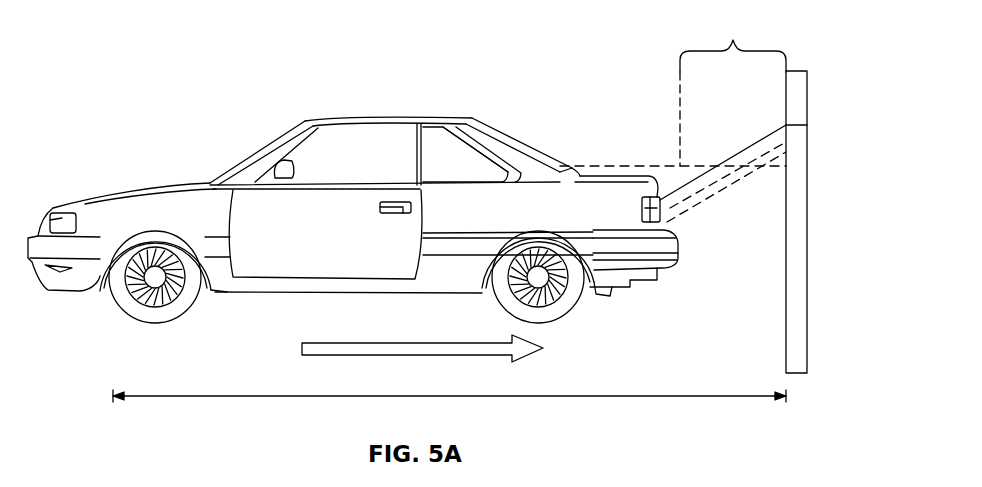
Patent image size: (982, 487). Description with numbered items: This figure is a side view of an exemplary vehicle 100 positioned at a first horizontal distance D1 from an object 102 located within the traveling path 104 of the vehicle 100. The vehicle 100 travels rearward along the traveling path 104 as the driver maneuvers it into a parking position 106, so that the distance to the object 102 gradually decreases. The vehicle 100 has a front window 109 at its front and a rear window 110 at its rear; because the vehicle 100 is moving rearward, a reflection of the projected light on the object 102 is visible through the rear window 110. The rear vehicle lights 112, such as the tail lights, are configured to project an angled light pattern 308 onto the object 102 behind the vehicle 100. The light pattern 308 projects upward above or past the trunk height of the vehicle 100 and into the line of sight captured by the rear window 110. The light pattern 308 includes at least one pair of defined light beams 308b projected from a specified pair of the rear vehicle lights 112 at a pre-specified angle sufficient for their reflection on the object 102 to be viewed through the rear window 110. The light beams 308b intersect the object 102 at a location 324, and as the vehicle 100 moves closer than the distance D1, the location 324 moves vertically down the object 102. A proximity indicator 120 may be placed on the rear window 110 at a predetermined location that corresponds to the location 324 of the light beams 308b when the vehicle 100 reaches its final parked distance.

The vehicle 100 is at (330, 118).
The front window 109 is at (262, 150).
The rear window 110 is at (502, 142).
The proximity indicator 120 is at (560, 166).
The rear vehicle lights 112 is at (654, 222).
The traveling path 104 is at (390, 356).
The parking position 106 is at (487, 397).
The object 102 is at (808, 305).
The light beams 308b is at (752, 143).
The light pattern 308 is at (717, 198).
The location 324 is at (808, 126).
The first horizontal distance D1 is at (673, 90).